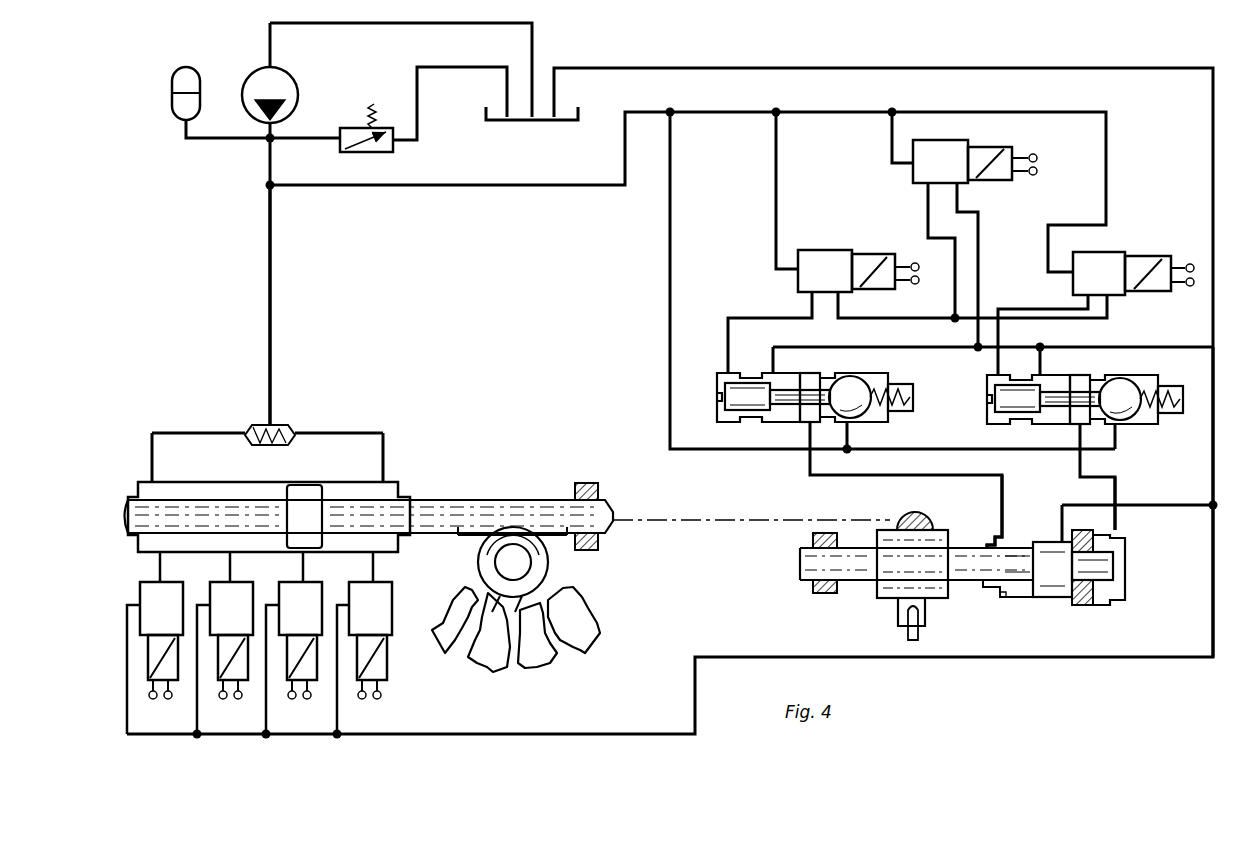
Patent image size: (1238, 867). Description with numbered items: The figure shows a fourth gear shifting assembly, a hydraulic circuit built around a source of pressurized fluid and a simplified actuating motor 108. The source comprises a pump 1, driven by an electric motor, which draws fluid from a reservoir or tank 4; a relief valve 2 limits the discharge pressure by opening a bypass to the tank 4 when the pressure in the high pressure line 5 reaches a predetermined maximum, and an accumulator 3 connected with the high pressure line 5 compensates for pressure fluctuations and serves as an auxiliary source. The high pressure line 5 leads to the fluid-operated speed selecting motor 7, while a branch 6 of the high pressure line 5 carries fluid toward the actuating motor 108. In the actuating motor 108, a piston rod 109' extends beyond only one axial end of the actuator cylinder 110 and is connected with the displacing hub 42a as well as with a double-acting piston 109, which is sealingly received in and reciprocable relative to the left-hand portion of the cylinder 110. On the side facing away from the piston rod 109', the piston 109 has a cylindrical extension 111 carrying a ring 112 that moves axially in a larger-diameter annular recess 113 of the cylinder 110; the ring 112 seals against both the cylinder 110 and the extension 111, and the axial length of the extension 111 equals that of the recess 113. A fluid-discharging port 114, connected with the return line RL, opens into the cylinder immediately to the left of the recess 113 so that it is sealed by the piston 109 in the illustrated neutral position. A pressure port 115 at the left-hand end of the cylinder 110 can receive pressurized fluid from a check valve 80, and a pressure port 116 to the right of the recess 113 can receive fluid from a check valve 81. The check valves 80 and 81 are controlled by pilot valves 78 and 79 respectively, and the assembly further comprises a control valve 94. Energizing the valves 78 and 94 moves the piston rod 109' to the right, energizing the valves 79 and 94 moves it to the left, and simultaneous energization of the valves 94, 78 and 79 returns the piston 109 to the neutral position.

The pump 1 is at (290, 82).
The relief valve 2 is at (346, 126).
The accumulator 3 is at (170, 88).
The reservoir or tank 4 is at (488, 120).
The high pressure line 5 is at (272, 262).
The branch of the high pressure line 6 is at (462, 187).
The speed selecting motor 7 is at (424, 456).
The pilot valve 78 is at (813, 258).
The pilot valve 79 is at (1107, 262).
The check valve 80 is at (866, 377).
The check valve 81 is at (1120, 378).
The control valve 94 is at (958, 148).
The return line RL is at (1212, 470).
The actuating motor 108 is at (860, 612).
The displacing hub 42a is at (937, 598).
The actuator cylinder 110 is at (993, 597).
The piston rod 109' is at (1020, 597).
The double-acting piston 109 is at (1055, 590).
The ring 112 is at (1083, 602).
The annular recess 113 is at (1097, 520).
The cylindrical extension 111 is at (1108, 568).
The pressure port 116 is at (1120, 527).
The fluid-discharging port 114 is at (1062, 520).
The pressure port 115 is at (1002, 518).